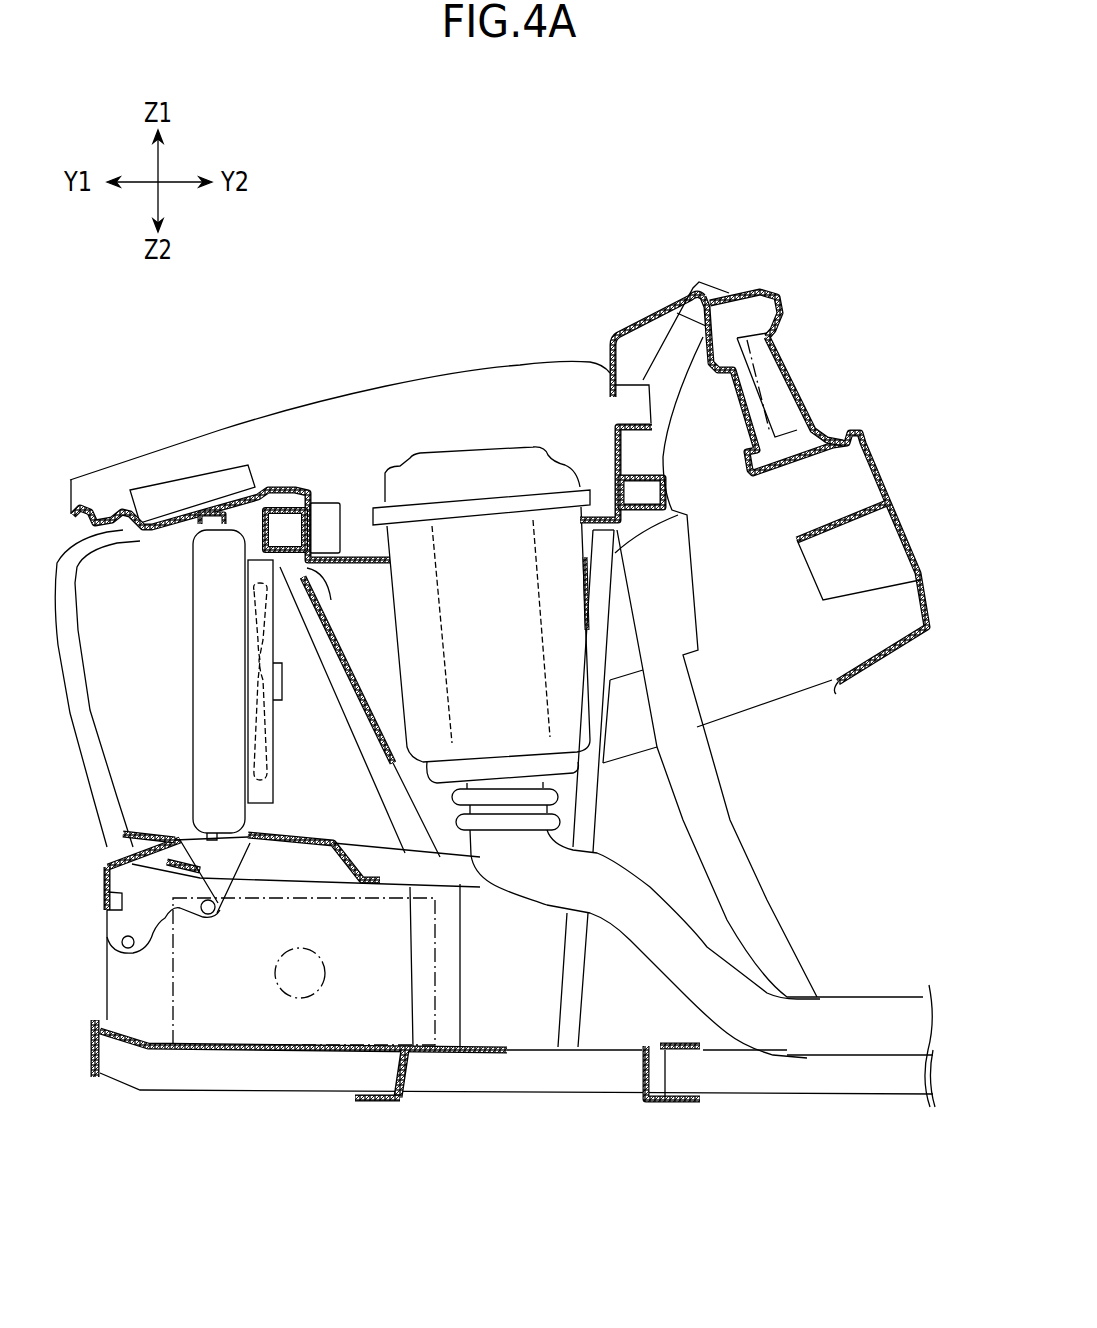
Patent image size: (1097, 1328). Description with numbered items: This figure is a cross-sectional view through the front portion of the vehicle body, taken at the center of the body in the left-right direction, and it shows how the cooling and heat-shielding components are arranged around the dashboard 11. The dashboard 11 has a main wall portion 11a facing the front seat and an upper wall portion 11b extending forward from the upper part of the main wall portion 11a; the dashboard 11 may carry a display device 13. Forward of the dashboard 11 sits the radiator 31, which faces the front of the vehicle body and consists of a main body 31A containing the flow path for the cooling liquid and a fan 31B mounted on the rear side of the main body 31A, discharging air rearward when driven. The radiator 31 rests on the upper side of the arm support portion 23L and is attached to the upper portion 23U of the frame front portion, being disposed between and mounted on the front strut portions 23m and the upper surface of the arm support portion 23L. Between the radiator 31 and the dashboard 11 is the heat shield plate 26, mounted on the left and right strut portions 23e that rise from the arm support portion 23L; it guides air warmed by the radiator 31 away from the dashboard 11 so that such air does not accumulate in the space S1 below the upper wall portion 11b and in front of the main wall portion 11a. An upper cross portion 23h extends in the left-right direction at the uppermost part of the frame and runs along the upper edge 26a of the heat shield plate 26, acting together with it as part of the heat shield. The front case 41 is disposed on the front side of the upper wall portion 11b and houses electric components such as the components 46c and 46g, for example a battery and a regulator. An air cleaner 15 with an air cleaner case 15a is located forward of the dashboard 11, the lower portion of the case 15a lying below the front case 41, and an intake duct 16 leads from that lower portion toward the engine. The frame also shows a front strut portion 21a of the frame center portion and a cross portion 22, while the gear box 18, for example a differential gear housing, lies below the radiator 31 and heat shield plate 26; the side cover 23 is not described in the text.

The dashboard 11 is at (752, 288).
The main wall portion 11a is at (867, 446).
The upper wall portion 11b is at (643, 319).
The display device 13 is at (770, 387).
The air cleaner 15 is at (457, 451).
The air cleaner case 15a is at (503, 528).
The intake duct 16 is at (790, 1040).
The gear box 18 is at (217, 1033).
The front strut portion 21a is at (732, 819).
The cross portion 22 is at (667, 487).
The side cover 23 is at (382, 1120).
The arm support portion 23L is at (288, 1095).
The upper portion 23U is at (347, 562).
The strut portion 23e is at (390, 807).
The upper cross portion 23h is at (277, 507).
The front strut portion 23m is at (83, 703).
The heat shield plate 26 is at (370, 722).
The upper edge 26a is at (309, 576).
The radiator 31 is at (128, 547).
The main body 31A is at (200, 550).
The fan 31B is at (253, 628).
The front case 41 is at (217, 435).
The electric component 46c is at (170, 497).
The electric component 46g is at (323, 503).
The space S1 is at (773, 572).